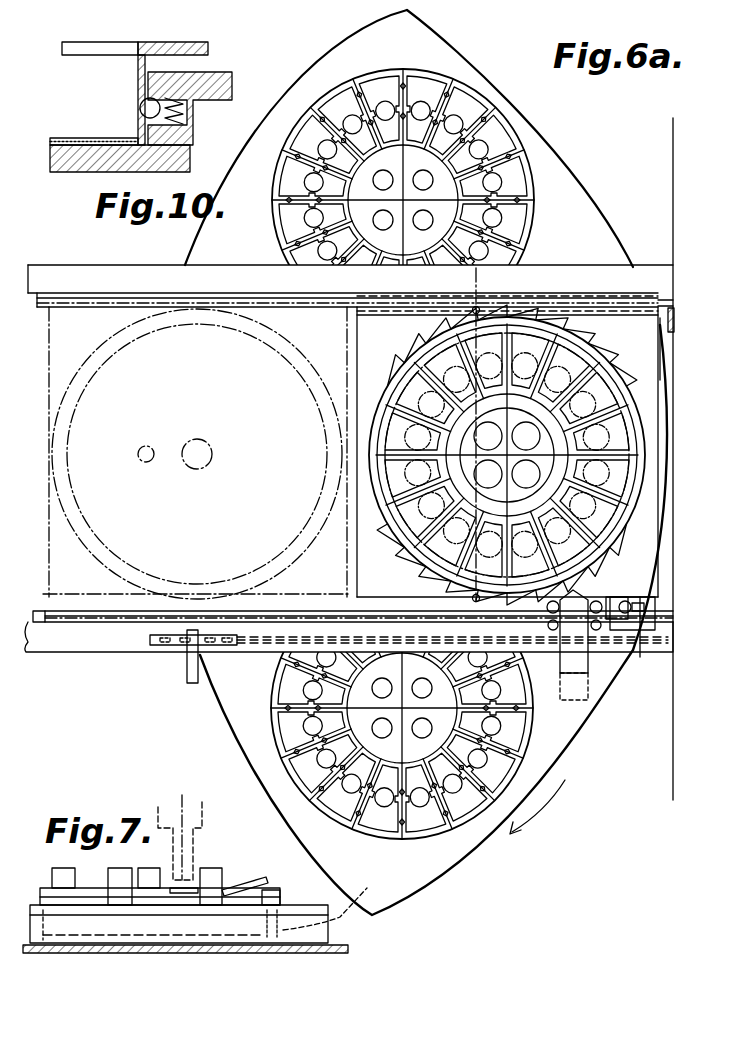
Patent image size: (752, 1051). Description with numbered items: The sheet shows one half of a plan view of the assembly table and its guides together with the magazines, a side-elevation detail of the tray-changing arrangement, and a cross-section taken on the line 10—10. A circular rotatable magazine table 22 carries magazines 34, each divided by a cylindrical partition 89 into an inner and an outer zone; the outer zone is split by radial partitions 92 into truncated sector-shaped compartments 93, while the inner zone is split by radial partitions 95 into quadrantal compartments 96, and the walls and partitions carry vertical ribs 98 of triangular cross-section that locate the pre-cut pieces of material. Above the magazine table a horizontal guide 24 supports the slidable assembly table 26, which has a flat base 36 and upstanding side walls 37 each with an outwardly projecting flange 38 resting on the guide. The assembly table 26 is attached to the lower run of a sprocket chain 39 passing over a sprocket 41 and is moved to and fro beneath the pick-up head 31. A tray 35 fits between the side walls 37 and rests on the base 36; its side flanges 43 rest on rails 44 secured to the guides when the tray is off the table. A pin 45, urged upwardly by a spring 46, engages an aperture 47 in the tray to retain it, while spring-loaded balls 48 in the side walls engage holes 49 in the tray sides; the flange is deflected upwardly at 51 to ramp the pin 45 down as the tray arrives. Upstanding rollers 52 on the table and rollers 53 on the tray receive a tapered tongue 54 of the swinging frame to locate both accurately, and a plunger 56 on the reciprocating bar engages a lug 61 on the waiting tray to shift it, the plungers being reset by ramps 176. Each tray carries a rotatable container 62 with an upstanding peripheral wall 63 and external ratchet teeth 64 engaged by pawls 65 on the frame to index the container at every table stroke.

In FIG. 6A, the section line 10 is at (492, 318).
In FIG. 6A, the magazine table 22 is at (593, 200).
In FIG. 6A, the horizontal guide 24 is at (160, 277).
In FIG. 6A, the assembly table 26 is at (641, 286).
In FIG. 6A, the pick-up head 31 is at (600, 256).
In FIG. 6A, the magazine 34 is at (540, 218).
In FIG. 6A, the tray 35 is at (73, 315).
In FIG. 10, the tray 35 is at (130, 137).
In FIG. 10, the flat base 36 is at (88, 165).
In FIG. 10, the side wall 37 is at (185, 136).
In FIG. 10, the flange 38 is at (232, 82).
In FIG. 6A, the sprocket chain 39 is at (265, 642).
In FIG. 6A, the sprocket 41 is at (158, 645).
In FIG. 10, the side flange 43 is at (210, 53).
In FIG. 6A, the rail 44 is at (122, 295).
In FIG. 6A, the pin 45 is at (626, 598).
In FIG. 7, the pin 45 is at (282, 897).
In FIG. 6A, the spring 46 is at (340, 917).
In FIG. 6A, the aperture 47 is at (628, 600).
In FIG. 10, the spring-loaded ball 48 is at (140, 108).
In FIG. 10, the hole 49 is at (142, 100).
In FIG. 7, the ramp 51 is at (268, 880).
In FIG. 6A, the upstanding roller 52 is at (552, 640).
In FIG. 7, the upstanding roller 52 is at (122, 870).
In FIG. 6A, the upstanding roller 53 is at (597, 600).
In FIG. 7, the upstanding roller 53 is at (62, 868).
In FIG. 6A, the tongue 54 is at (582, 660).
In FIG. 7, the plunger 56 is at (180, 827).
In FIG. 6A, the lug 61 is at (630, 678).
In FIG. 7, the lug 61 is at (185, 878).
In FIG. 6A, the container 62 is at (375, 462).
In FIG. 6A, the peripheral wall 63 is at (417, 352).
In FIG. 6A, the ratchet teeth 64 is at (448, 582).
In FIG. 6A, the pawl 65 is at (670, 320).
In FIG. 6A, the cylindrical partition 89 is at (520, 133).
In FIG. 6A, the radial partition 92 is at (433, 78).
In FIG. 6A, the compartment 93 is at (462, 60).
In FIG. 6A, the radial partition 95 is at (455, 197).
In FIG. 6A, the quadrantal compartment 96 is at (347, 212).
In FIG. 6A, the vertical rib 98 is at (531, 175).
In FIG. 6A, the ramp 176 is at (662, 630).